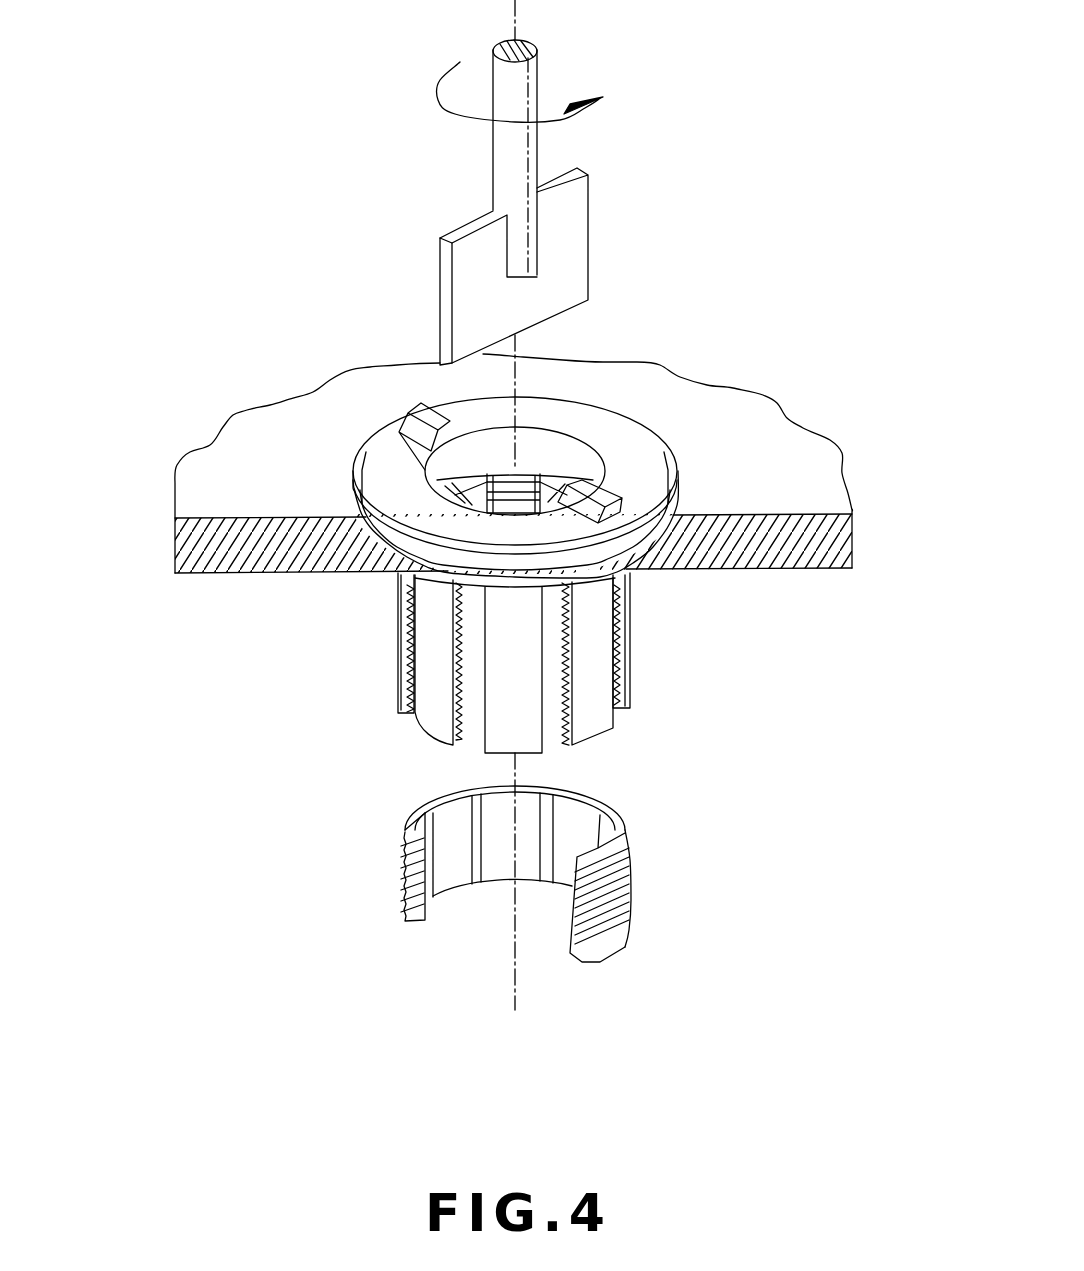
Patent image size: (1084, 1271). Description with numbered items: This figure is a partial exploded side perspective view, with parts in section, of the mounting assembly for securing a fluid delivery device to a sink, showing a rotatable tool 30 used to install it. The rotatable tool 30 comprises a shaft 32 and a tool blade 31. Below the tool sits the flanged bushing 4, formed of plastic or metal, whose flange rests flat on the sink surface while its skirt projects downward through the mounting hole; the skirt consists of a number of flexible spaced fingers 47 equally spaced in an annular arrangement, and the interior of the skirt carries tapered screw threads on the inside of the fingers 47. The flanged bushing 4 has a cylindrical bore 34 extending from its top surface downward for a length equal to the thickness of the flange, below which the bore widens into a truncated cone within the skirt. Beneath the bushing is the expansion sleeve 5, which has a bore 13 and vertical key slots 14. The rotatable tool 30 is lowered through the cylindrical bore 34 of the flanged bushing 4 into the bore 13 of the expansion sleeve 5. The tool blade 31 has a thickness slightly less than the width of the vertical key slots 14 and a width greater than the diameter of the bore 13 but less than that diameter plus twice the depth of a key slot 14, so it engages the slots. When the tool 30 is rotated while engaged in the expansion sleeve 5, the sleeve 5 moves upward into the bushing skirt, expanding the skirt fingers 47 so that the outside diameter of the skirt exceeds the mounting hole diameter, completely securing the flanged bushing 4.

The rotatable tool 30 is at (627, 152).
The tool blade 31 is at (573, 243).
The shaft 32 is at (502, 155).
The cylindrical bore 34 is at (568, 457).
The flanged bushing 4 is at (432, 582).
The flexible spaced fingers 47 is at (597, 728).
The expansion sleeve 5 is at (583, 794).
The vertical key slots 14 is at (478, 795).
The bore of the expansion sleeve 13 is at (502, 880).